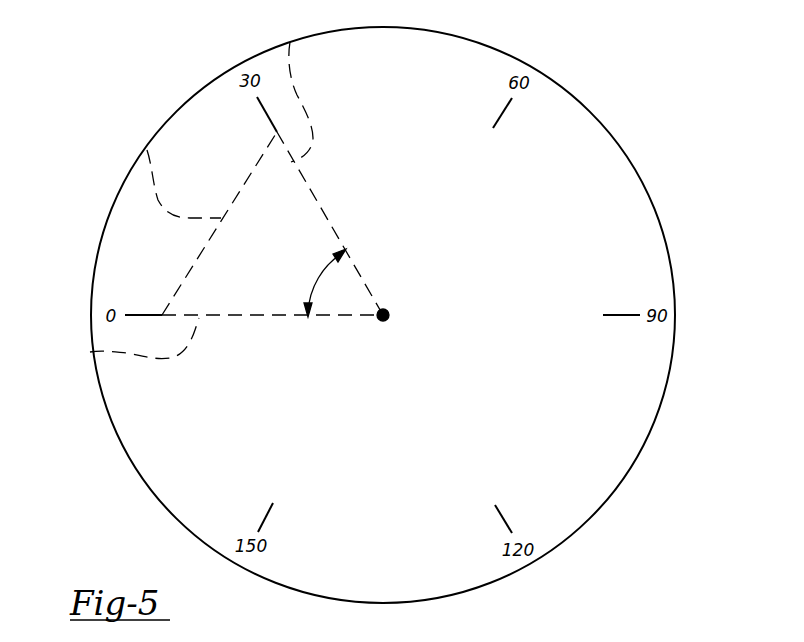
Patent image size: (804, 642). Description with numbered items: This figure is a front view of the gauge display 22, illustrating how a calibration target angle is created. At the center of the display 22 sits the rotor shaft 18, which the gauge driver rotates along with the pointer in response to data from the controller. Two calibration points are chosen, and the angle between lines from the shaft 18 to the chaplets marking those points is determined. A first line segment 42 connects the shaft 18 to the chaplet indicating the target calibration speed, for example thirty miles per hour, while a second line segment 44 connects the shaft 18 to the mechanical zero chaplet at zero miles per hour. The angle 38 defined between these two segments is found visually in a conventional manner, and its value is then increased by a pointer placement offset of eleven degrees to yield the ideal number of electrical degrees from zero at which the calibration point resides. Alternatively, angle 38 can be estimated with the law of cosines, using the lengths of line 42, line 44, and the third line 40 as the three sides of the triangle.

The gauge display 22 is at (647, 142).
The rotor shaft 18 is at (389, 315).
The angle 38 is at (317, 277).
The line 40 is at (147, 150).
The first line segment 42 is at (294, 34).
The second line segment 44 is at (90, 352).